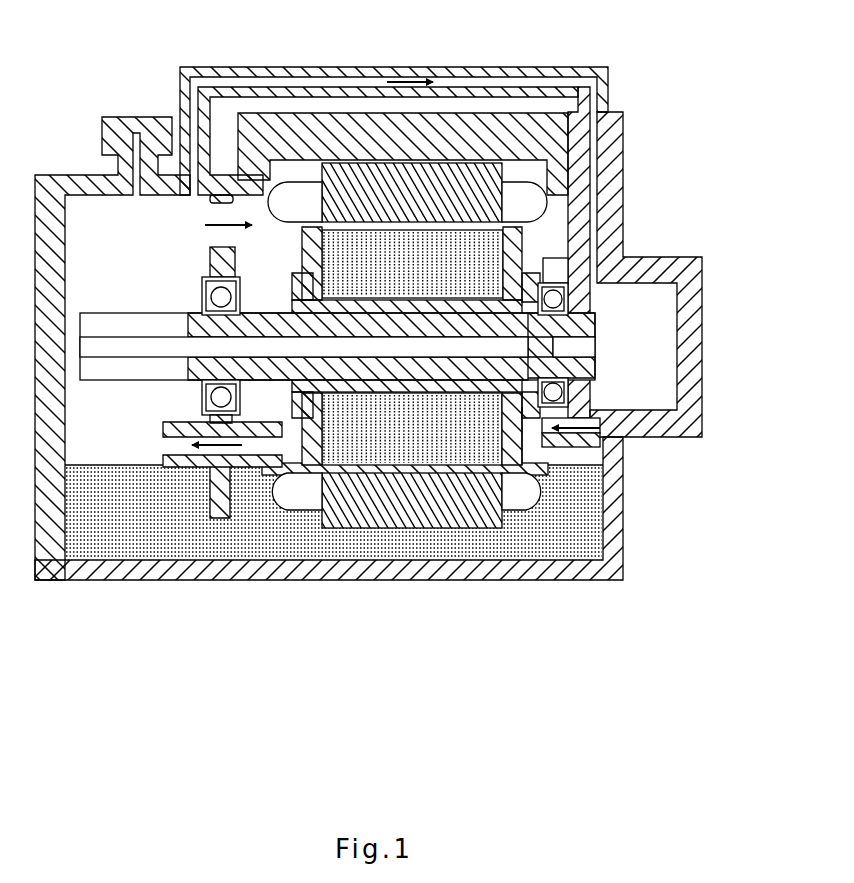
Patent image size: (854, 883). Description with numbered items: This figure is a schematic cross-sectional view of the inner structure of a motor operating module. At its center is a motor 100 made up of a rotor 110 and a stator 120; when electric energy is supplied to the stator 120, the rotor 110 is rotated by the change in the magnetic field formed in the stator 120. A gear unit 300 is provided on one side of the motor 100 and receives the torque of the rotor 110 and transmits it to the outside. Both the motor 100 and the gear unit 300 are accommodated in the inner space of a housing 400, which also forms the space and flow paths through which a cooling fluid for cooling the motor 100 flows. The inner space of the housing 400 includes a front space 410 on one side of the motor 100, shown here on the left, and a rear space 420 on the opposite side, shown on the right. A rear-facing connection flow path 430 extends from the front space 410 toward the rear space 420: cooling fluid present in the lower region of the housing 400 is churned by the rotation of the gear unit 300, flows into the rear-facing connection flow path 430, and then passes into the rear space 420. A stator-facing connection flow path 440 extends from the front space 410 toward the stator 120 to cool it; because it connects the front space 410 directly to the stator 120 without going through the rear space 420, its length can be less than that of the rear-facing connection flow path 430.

The motor 100 is at (427, 441).
The rotor 110 is at (590, 260).
The stator 120 is at (547, 205).
The gear unit 300 is at (119, 382).
The housing 400 is at (641, 468).
The front space 410 is at (262, 288).
The rear space 420 is at (641, 348).
The rear-facing connection flow path 430 is at (482, 80).
The stator-facing connection flow path 440 is at (222, 232).